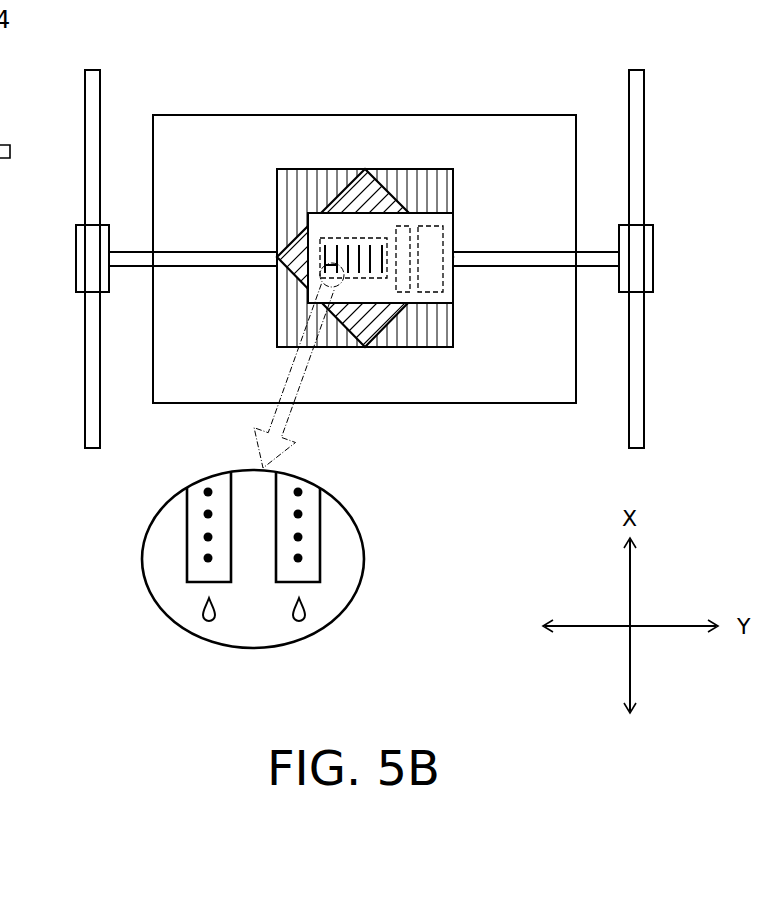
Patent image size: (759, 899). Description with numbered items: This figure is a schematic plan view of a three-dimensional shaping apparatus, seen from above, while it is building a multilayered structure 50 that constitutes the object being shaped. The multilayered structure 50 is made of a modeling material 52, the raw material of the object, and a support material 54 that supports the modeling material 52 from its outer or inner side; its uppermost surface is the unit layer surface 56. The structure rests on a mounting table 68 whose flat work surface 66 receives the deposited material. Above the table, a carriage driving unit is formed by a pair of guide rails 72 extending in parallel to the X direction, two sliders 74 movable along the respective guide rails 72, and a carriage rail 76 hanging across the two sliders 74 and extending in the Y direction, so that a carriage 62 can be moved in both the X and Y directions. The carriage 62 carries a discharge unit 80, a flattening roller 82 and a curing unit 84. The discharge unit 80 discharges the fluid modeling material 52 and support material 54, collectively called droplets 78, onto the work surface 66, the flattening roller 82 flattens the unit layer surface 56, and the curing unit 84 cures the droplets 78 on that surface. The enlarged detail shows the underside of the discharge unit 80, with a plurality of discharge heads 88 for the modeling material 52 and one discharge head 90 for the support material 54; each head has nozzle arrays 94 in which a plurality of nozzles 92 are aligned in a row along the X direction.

The multilayered structure 50 is at (363, 340).
The modeling material 52 is at (378, 347).
The support material 54 is at (418, 333).
The unit layer surface 56 is at (292, 190).
The carriage 62 is at (452, 216).
The work surface 66 is at (204, 128).
The mounting table 68 is at (364, 208).
The guide rails 72 is at (94, 118).
The sliders 74 is at (85, 265).
The carriage rail 76 is at (528, 258).
The droplets 78 is at (293, 612).
The discharge unit 80 is at (354, 238).
The flattening roller 82 is at (408, 226).
The curing unit 84 is at (430, 228).
The discharge heads 88 is at (292, 576).
The discharge head 90 is at (210, 576).
The nozzles 92 is at (204, 495).
The nozzle arrays 94 is at (256, 578).